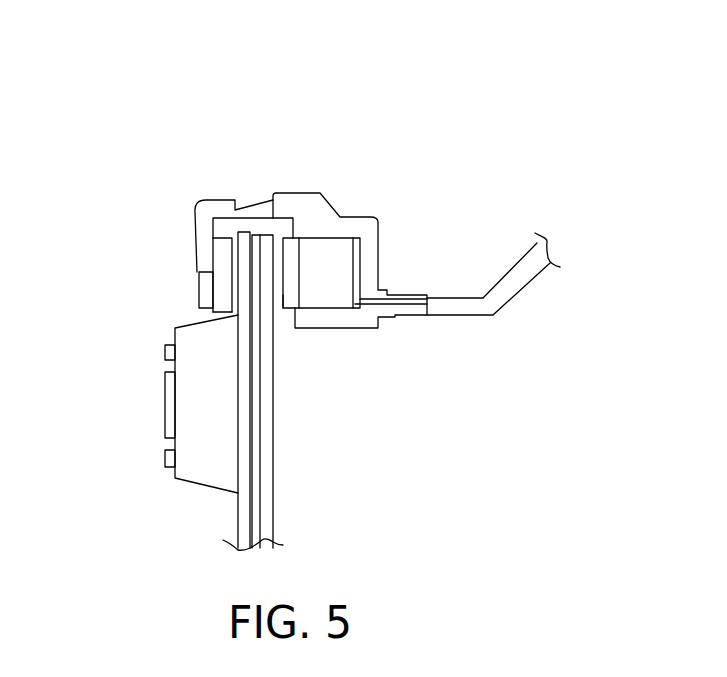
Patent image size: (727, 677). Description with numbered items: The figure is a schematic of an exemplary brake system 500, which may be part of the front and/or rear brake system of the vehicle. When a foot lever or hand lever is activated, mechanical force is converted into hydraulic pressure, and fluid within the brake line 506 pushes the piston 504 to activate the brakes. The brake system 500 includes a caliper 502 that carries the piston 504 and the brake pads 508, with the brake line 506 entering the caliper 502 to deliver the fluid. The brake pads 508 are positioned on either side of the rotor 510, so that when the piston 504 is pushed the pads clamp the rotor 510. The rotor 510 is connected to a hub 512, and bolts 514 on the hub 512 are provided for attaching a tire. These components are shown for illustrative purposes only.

The brake system 500 is at (312, 152).
The caliper 502 is at (200, 207).
The piston 504 is at (335, 250).
The brake line 506 is at (530, 255).
The brake pads 508 is at (222, 290).
The rotor 510 is at (270, 449).
The hub 512 is at (202, 470).
The bolts 514 is at (165, 353).